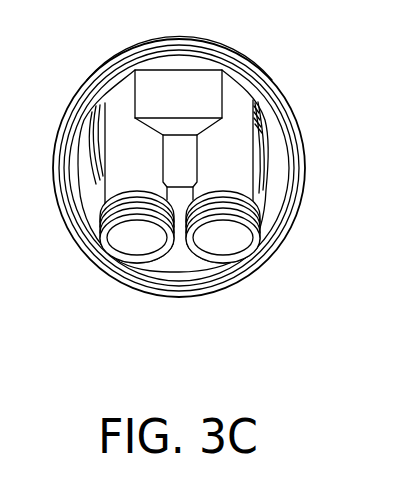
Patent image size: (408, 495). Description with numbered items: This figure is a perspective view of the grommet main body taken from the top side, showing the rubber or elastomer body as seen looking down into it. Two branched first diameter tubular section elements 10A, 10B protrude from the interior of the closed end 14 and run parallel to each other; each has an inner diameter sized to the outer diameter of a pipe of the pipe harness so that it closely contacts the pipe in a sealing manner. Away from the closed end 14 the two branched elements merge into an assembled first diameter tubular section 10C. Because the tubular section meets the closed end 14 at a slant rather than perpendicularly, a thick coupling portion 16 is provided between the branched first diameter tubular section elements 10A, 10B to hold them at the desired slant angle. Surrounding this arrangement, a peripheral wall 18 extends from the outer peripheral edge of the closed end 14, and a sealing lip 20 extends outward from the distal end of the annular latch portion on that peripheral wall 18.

The branched first diameter tubular section element 10A is at (228, 143).
The branched first diameter tubular section element 10B is at (124, 146).
The assembled first diameter tubular section 10C is at (267, 143).
The closed end 14 is at (280, 230).
The coupling portion 16 is at (180, 167).
The peripheral wall 18 is at (308, 160).
The sealing lip 20 is at (295, 197).